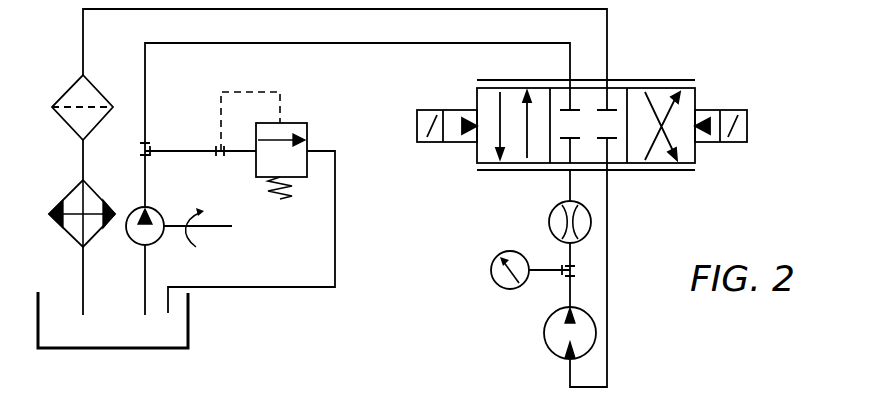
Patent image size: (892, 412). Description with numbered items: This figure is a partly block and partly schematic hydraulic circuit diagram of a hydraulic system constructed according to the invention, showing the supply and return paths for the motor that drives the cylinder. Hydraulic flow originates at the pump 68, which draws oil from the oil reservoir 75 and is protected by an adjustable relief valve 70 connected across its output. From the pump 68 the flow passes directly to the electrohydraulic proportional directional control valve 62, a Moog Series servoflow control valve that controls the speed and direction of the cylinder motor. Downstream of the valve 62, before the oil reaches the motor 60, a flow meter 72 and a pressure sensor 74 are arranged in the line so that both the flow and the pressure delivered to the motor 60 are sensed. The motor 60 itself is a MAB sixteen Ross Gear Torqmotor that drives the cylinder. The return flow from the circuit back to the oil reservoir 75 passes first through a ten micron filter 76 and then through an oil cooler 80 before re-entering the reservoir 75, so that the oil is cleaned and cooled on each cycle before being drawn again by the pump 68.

The Torqmotor 60 is at (547, 350).
The electrohydraulic servoflow control valve 62 is at (700, 74).
The pump 68 is at (160, 248).
The adjustable relief valve 70 is at (314, 134).
The flow meter 72 is at (549, 212).
The pressure sensor 74 is at (507, 291).
The oil reservoir 75 is at (190, 330).
The filter 76 is at (99, 90).
The oil cooler 80 is at (64, 238).